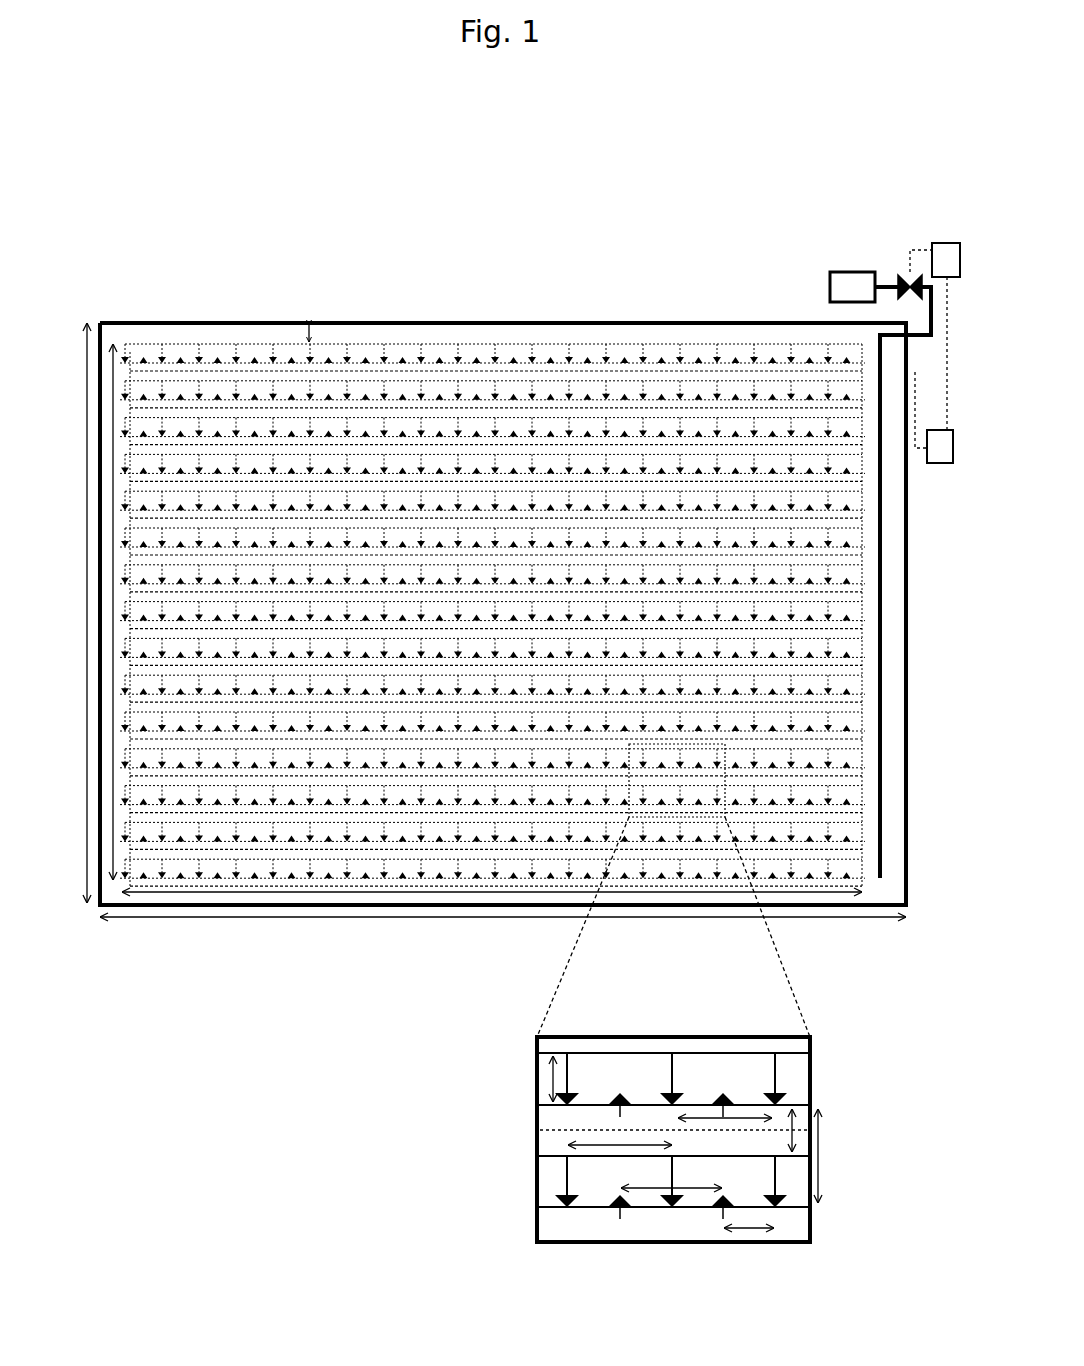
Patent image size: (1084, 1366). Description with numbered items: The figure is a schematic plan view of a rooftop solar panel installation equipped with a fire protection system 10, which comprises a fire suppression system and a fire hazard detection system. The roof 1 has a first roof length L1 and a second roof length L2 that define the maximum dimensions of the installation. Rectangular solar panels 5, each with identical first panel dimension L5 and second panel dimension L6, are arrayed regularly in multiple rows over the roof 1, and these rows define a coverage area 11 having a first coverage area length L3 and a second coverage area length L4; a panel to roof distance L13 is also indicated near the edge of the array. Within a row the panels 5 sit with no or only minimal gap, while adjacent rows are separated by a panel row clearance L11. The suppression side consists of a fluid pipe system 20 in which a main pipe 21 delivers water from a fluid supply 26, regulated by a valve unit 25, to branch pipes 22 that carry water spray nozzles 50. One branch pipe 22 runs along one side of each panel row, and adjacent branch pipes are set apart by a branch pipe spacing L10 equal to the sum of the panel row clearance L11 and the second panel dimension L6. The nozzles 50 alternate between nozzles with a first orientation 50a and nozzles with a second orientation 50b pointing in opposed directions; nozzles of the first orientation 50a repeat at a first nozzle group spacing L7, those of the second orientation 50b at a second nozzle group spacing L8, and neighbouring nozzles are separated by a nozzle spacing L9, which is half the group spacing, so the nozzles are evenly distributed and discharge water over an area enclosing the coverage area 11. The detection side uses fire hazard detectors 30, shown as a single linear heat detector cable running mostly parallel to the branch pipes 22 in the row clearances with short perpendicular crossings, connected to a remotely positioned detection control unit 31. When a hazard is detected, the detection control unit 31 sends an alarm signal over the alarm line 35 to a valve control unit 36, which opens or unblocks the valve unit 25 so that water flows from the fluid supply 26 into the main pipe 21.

The roof 1 is at (282, 321).
The solar panel 5 is at (738, 352).
The fire protection system 10 is at (945, 190).
The coverage area 11 is at (255, 887).
The fluid pipe system 20 is at (862, 682).
The main pipe 21 is at (880, 753).
The branch pipe 22 is at (872, 845).
The valve unit 25 is at (905, 270).
The fluid supply 26 is at (830, 290).
The fire hazard detector 30 is at (850, 573).
The detection control unit 31 is at (925, 463).
The alarm line 35 is at (946, 387).
The valve control unit 36 is at (946, 243).
The water spray nozzle 50 is at (547, 365).
The water spray nozzle with first orientation 50a is at (775, 1105).
The water spray nozzle with second orientation 50b is at (722, 1200).
The first roof length L1 is at (375, 917).
The second roof length L2 is at (87, 663).
The first coverage area length L3 is at (343, 893).
The second coverage area length L4 is at (113, 705).
The first panel dimension L5 is at (565, 1146).
The second panel dimension L6 is at (548, 1080).
The first nozzle group spacing L7 is at (618, 1188).
The second nozzle group spacing L8 is at (773, 1116).
The nozzle spacing L9 is at (778, 1230).
The branch pipe spacing L10 is at (822, 1172).
The panel row clearance L11 is at (797, 1130).
The panel to roof distance L13 is at (313, 321).